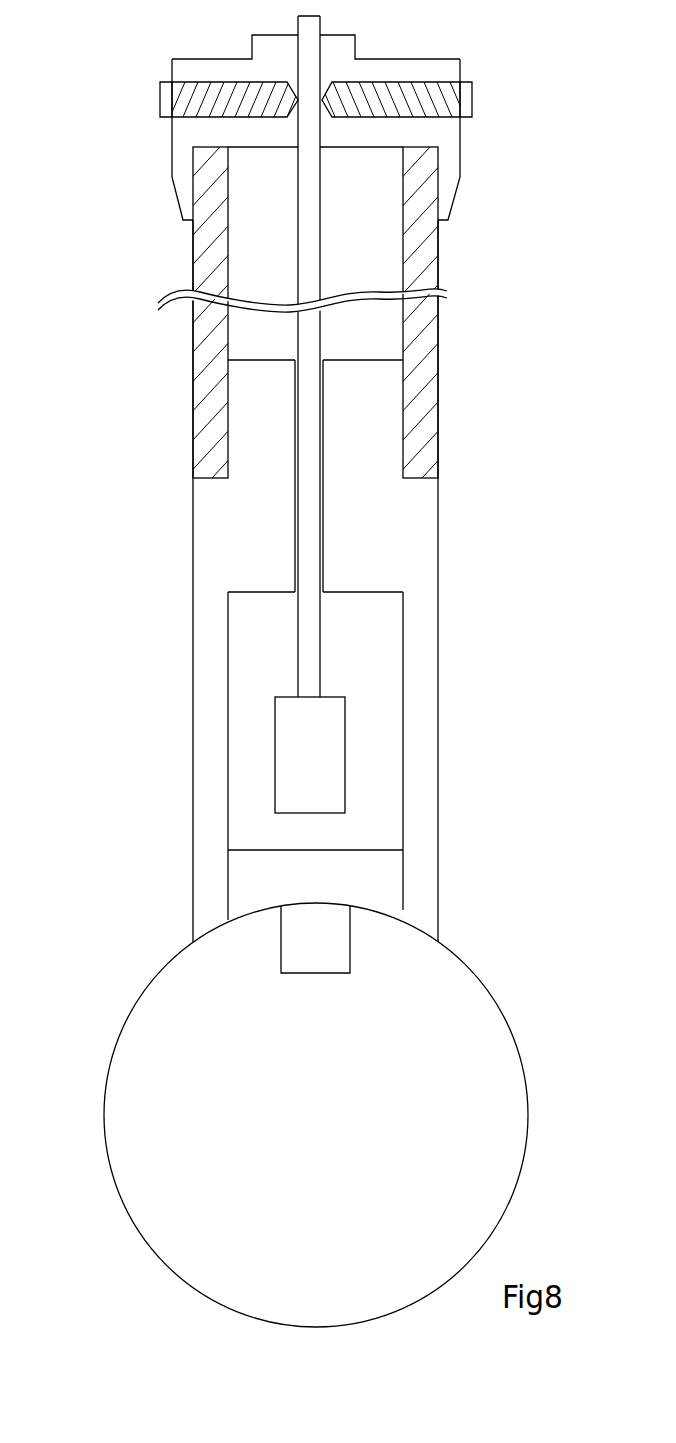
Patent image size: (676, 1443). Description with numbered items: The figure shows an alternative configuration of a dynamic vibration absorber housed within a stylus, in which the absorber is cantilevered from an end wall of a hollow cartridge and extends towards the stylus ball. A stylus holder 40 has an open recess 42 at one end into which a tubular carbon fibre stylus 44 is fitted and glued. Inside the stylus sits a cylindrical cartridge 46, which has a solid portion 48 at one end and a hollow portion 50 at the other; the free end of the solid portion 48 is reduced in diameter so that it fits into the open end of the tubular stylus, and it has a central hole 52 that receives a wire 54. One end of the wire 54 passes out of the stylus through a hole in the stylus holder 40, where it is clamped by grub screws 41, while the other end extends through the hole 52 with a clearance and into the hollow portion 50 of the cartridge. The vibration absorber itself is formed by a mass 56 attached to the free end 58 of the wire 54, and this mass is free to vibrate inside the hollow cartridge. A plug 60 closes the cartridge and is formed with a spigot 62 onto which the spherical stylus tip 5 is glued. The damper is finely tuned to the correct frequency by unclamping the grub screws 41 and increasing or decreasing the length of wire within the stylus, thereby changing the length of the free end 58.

The spherical tip 5 is at (162, 1023).
The stylus holder 40 is at (182, 134).
The grub screws 41 is at (167, 103).
The open recess 42 is at (180, 182).
The tubular carbon fibre stylus 44 is at (413, 258).
The cartridge 46 is at (422, 563).
The solid portion 48 is at (253, 492).
The hollow portion 50 is at (242, 660).
The central hole 52 is at (325, 497).
The wire 54 is at (323, 335).
The mass 56 is at (332, 782).
The free end 58 is at (310, 655).
The plug 60 is at (382, 887).
The spigot 62 is at (290, 948).